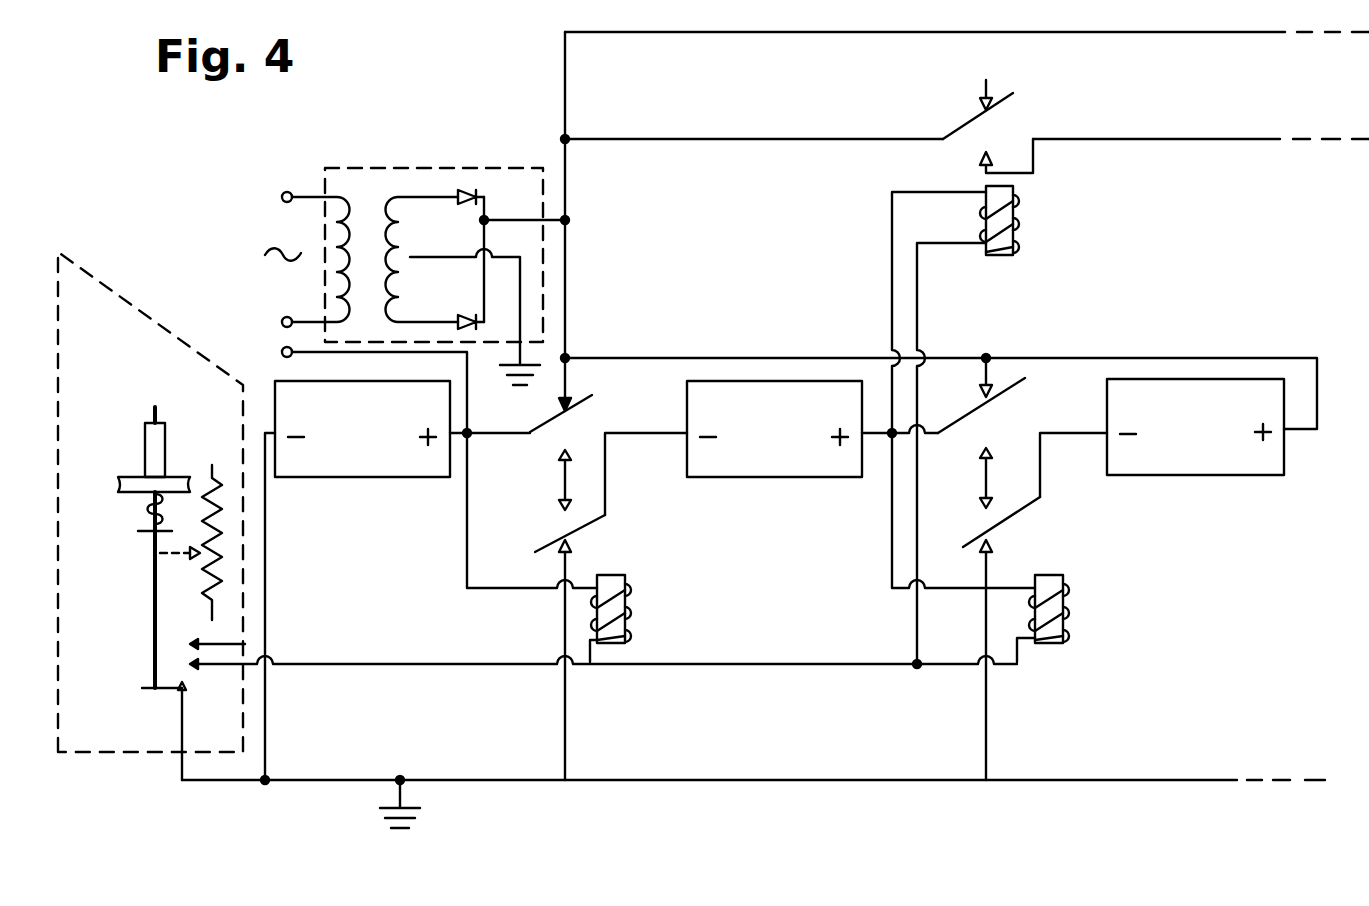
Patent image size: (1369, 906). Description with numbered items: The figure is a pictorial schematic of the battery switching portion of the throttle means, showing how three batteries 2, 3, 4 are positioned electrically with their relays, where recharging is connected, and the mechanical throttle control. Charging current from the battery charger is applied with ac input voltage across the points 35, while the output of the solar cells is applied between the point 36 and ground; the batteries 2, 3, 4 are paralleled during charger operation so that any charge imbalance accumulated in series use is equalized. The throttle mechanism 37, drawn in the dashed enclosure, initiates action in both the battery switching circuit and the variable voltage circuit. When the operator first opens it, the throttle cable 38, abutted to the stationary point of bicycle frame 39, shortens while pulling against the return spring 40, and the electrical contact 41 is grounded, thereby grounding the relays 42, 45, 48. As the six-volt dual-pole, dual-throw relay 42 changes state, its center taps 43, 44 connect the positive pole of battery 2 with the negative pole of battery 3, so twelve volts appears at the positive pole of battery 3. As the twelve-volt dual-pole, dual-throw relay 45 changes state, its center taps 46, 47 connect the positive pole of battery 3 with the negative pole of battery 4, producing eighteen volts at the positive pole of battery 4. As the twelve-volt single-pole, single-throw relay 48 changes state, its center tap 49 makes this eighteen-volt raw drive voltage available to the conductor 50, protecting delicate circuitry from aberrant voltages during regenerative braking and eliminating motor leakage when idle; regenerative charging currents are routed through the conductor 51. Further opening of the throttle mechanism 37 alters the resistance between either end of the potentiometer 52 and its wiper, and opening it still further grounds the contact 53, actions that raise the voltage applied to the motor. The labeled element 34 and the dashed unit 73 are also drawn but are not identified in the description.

The battery 2 is at (367, 476).
The battery 3 is at (782, 478).
The battery 4 is at (1212, 468).
The sensor unit 34 is at (168, 440).
The points 35 is at (281, 198).
The point 36 is at (282, 355).
The throttle mechanism 37 is at (90, 752).
The throttle cable 38 is at (148, 595).
The stationary point of bicycle frame 39 is at (115, 488).
The return spring 40 is at (148, 525).
The electrical contact 41 is at (152, 665).
The dual-pole, dual-throw relay 42 is at (609, 644).
The center tap 43 is at (588, 528).
The center tap 44 is at (560, 418).
The dual-pole, dual-throw relay 45 is at (1049, 644).
The center tap 46 is at (1003, 518).
The center tap 47 is at (985, 410).
The single-pole, single-throw relay 48 is at (1001, 255).
The center tap 49 is at (998, 118).
The conductor 50 is at (1190, 140).
The conductor 51 is at (1200, 33).
The potentiometer 52 is at (222, 596).
The contact 53 is at (245, 644).
The transformer rectifier 73 is at (428, 172).